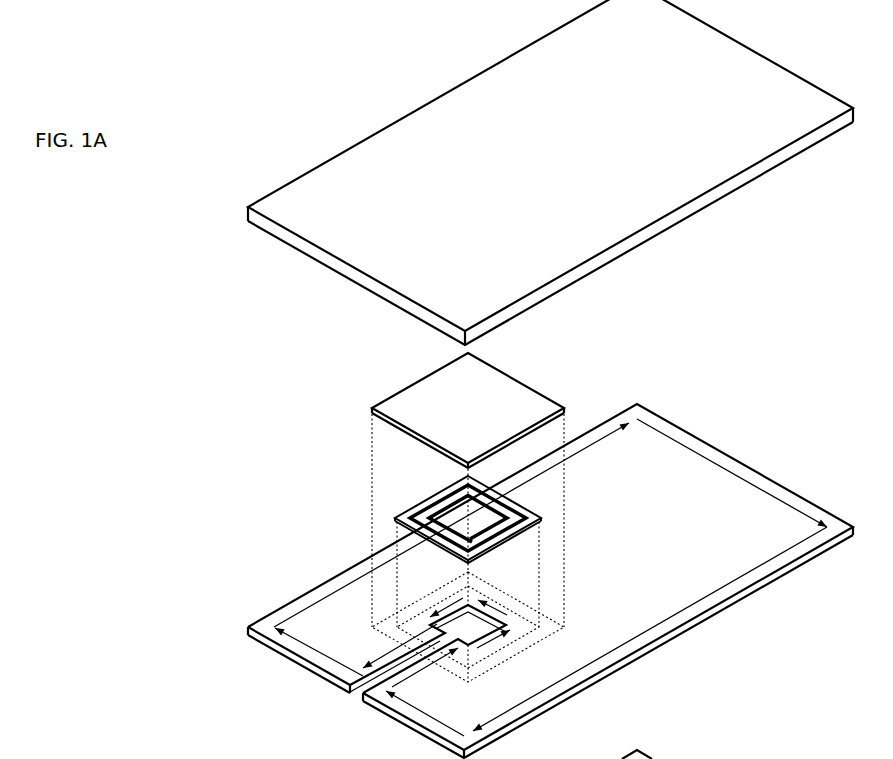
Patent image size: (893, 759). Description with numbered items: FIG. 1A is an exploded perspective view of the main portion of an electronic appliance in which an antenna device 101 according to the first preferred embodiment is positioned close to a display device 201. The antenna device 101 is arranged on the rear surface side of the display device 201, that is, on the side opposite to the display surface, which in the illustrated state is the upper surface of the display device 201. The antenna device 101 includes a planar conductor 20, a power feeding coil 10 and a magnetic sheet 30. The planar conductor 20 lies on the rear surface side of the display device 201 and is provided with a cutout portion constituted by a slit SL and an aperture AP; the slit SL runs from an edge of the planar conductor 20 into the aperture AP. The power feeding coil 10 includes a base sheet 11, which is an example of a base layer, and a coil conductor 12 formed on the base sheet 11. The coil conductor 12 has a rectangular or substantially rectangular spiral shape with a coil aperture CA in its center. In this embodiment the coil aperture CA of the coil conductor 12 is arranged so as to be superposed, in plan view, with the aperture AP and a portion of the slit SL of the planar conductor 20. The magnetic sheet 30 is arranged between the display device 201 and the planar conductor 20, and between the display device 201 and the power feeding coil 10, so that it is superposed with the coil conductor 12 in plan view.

The display device 201 is at (743, 72).
The magnetic sheet 30 is at (508, 400).
The power feeding coil 10 is at (540, 506).
The coil conductor 12 is at (422, 507).
The base sheet 11 is at (397, 517).
The coil aperture CA is at (484, 517).
The planar conductor 20 is at (723, 493).
The aperture AP is at (482, 627).
The slit SL is at (352, 697).
The antenna device 101 is at (295, 555).